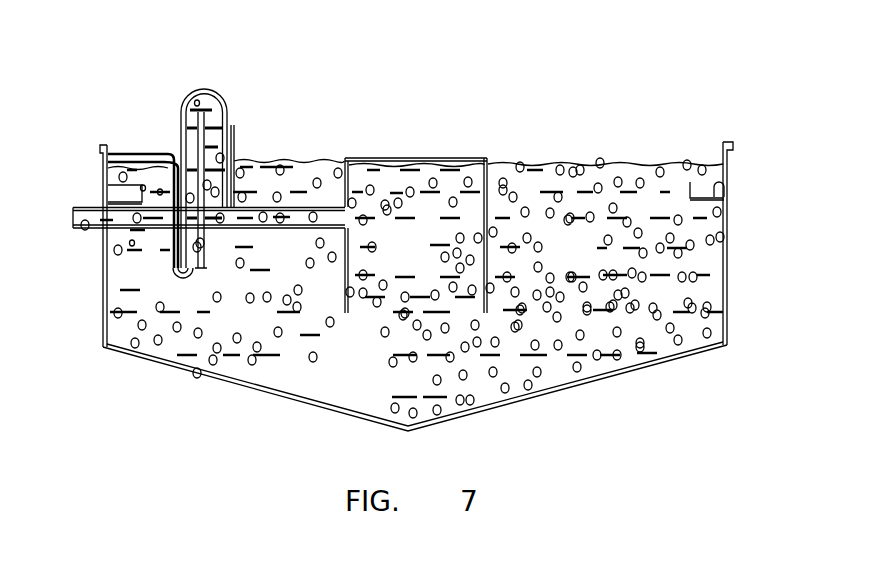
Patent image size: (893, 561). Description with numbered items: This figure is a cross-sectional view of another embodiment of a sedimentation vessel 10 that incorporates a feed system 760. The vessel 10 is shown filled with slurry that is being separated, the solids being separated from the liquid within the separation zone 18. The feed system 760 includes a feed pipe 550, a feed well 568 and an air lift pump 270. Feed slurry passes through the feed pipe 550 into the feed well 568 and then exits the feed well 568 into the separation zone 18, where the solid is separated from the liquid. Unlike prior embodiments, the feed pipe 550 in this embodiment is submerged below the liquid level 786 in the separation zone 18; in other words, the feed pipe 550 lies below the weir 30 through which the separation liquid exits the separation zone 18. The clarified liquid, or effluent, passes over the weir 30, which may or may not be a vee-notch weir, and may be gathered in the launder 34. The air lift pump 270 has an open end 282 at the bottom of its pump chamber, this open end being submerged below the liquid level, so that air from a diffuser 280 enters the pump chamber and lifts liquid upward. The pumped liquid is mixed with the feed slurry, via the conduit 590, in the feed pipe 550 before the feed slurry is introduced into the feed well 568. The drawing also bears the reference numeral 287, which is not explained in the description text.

The sedimentation vessel 10 is at (601, 395).
The separation zone 18 is at (589, 268).
The weir 30 is at (143, 188).
The launder 34 is at (717, 193).
The air lift pump 270 is at (226, 89).
The diffuser 280 is at (170, 248).
The open end 282 is at (199, 268).
The annular passage 287 is at (200, 240).
The feed pipe 550 is at (253, 220).
The feed well 568 is at (428, 255).
The conduit 590 is at (233, 156).
The feed system 760 is at (373, 140).
The liquid level 786 is at (150, 156).